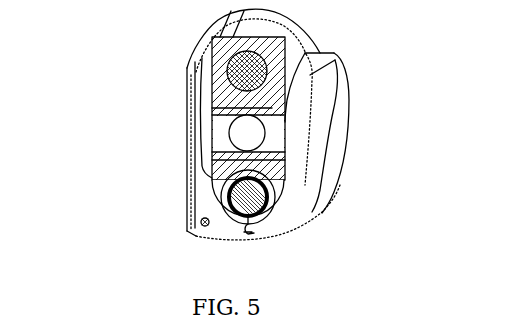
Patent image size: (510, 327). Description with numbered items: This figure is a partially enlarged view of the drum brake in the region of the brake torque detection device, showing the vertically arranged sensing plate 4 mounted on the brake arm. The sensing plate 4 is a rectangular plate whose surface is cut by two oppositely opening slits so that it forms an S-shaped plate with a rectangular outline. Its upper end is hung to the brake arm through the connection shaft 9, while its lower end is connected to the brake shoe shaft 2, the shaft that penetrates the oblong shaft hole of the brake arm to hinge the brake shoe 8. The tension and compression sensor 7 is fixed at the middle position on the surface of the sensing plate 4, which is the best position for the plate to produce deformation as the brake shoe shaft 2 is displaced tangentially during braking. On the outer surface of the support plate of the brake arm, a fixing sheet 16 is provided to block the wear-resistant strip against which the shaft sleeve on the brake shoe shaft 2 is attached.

The brake shoe shaft 2 is at (245, 188).
The sensing plate 4 is at (213, 127).
The tension and compression sensor 7 is at (258, 130).
The brake shoe 8 is at (258, 236).
The connection shaft 9 is at (243, 75).
The fixing sheet 16 is at (203, 184).